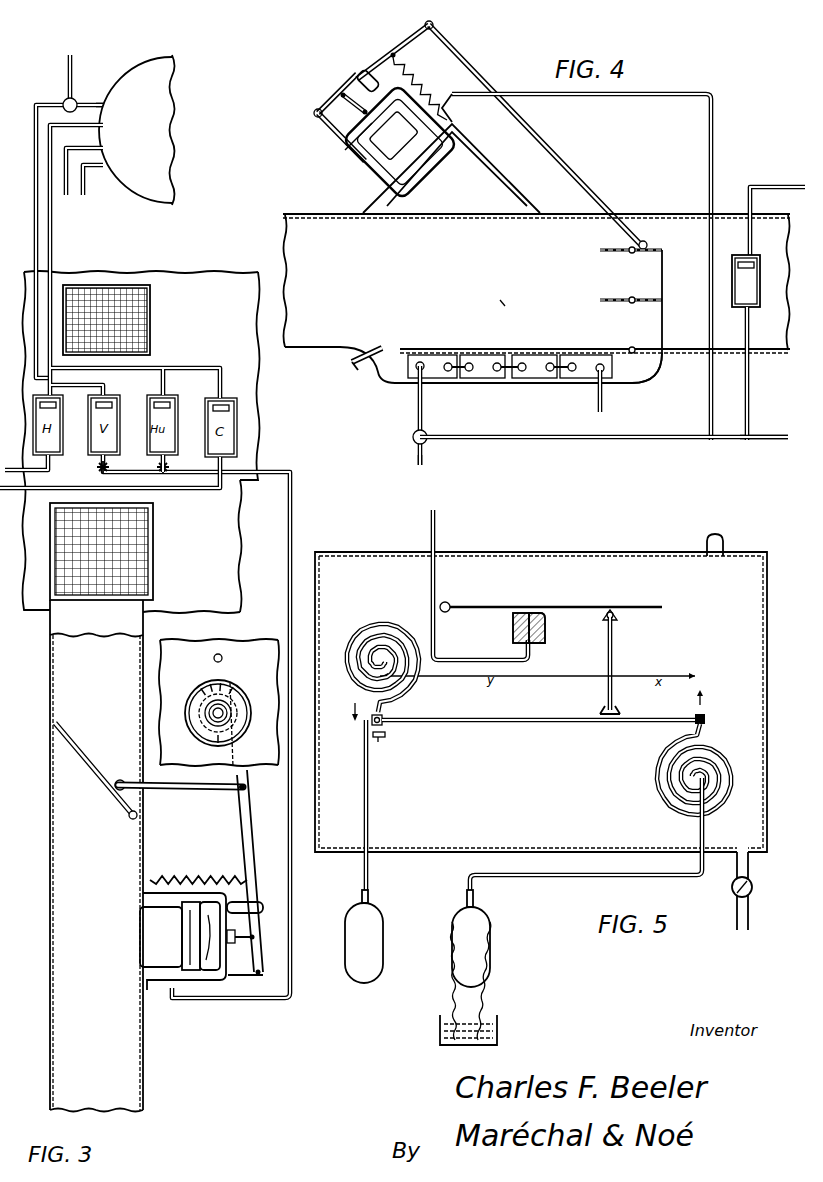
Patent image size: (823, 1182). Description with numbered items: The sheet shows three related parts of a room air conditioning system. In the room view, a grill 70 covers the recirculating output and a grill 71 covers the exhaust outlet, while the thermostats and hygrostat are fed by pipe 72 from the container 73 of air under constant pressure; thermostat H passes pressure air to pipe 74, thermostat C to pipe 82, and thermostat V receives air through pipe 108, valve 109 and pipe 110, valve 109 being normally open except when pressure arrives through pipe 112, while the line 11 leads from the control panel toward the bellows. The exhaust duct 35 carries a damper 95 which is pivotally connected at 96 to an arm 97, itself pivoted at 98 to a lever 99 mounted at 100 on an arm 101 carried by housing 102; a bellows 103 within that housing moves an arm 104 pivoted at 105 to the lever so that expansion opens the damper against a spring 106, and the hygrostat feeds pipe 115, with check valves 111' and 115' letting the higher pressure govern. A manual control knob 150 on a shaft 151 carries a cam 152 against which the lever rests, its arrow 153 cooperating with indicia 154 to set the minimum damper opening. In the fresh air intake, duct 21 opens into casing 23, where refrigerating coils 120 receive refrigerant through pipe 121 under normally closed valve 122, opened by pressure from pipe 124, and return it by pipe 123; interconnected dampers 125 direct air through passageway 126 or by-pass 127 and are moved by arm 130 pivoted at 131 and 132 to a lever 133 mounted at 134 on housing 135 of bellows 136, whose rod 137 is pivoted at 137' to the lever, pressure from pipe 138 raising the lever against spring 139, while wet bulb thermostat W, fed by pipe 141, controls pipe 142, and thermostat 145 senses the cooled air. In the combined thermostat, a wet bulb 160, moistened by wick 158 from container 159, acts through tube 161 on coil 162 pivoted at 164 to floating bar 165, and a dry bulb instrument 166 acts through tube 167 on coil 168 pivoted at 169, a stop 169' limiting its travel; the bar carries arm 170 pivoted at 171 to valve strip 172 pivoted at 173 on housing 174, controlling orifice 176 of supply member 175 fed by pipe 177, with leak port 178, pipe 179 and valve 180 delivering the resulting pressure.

In FIG. 3, the pipe 11 is at (287, 548).
In FIG. 4, the fresh air duct 21 is at (793, 290).
In FIG. 4, the casing 23 is at (660, 207).
In FIG. 3, the exhaust duct 35 is at (49, 806).
In FIG. 3, the grill 70 is at (151, 328).
In FIG. 3, the grill 71 is at (150, 543).
In FIG. 3, the pipe 72 is at (53, 252).
In FIG. 3, the container 73 is at (136, 130).
In FIG. 3, the pipe 74 is at (25, 459).
In FIG. 3, the pipe 82 is at (110, 483).
In FIG. 3, the damper 95 is at (97, 773).
In FIG. 3, the pivotal connection 96 is at (127, 771).
In FIG. 3, the arm 97 is at (167, 791).
In FIG. 3, the pivotal connection 98 is at (246, 787).
In FIG. 3, the lever 99 is at (243, 842).
In FIG. 3, the pivot 100 is at (262, 977).
In FIG. 3, the arm 101 is at (236, 977).
In FIG. 3, the housing 102 is at (184, 982).
In FIG. 3, the bellows 103 is at (150, 940).
In FIG. 3, the arm 104 is at (240, 946).
In FIG. 3, the pivotal connection 105 is at (256, 935).
In FIG. 3, the spring 106 is at (214, 878).
In FIG. 3, the pipe 108 is at (101, 104).
In FIG. 3, the valve 109 is at (66, 101).
In FIG. 3, the pipe 110 is at (36, 105).
In FIG. 3, the check valve 111' is at (86, 468).
In FIG. 3, the pipe 112 is at (68, 66).
In FIG. 4, the pipe 112 is at (752, 437).
In FIG. 3, the pipe 115 is at (188, 464).
In FIG. 3, the check valve 115' is at (147, 468).
In FIG. 4, the refrigerating coils 120 is at (485, 383).
In FIG. 4, the pipe 121 is at (415, 458).
In FIG. 4, the valve 122 is at (413, 436).
In FIG. 4, the pipe 123 is at (604, 406).
In FIG. 4, the pipe 124 is at (584, 440).
In FIG. 4, the dampers 125 is at (606, 250).
In FIG. 4, the passageway 126 is at (655, 376).
In FIG. 4, the by-pass 127 is at (504, 292).
In FIG. 4, the arm 130 is at (572, 166).
In FIG. 4, the pivotal connection 131 is at (648, 245).
In FIG. 4, the pivotal connection 132 is at (434, 26).
In FIG. 4, the lever 133 is at (410, 40).
In FIG. 4, the pivot 134 is at (314, 112).
In FIG. 4, the housing 135 is at (343, 148).
In FIG. 4, the bellows 136 is at (362, 175).
In FIG. 4, the rod 137 is at (331, 92).
In FIG. 4, the pivotal connection 137' is at (325, 76).
In FIG. 4, the pipe 138 is at (555, 100).
In FIG. 4, the spring 139 is at (410, 72).
In FIG. 3, the pipe 141 is at (87, 196).
In FIG. 4, the pipe 141 is at (752, 187).
In FIG. 4, the pipe 142 is at (750, 385).
In FIG. 4, the thermostat 145 is at (373, 350).
In FIG. 3, the manual control knob 150 is at (250, 674).
In FIG. 3, the shaft 151 is at (245, 740).
In FIG. 3, the cam 152 is at (208, 713).
In FIG. 3, the arrow 153 is at (240, 672).
In FIG. 3, the indicia 154 is at (216, 654).
In FIG. 5, the wick 158 is at (480, 1000).
In FIG. 5, the container 159 is at (497, 1028).
In FIG. 5, the wet bulb thermostat 160 is at (478, 942).
In FIG. 5, the fine bore tube 161 is at (544, 878).
In FIG. 5, the coil 162 is at (662, 803).
In FIG. 5, the pivotal connection 164 is at (693, 714).
In FIG. 5, the floating bar 165 is at (640, 725).
In FIG. 5, the dry bulb instrument 166 is at (375, 948).
In FIG. 5, the fine tube 167 is at (370, 828).
In FIG. 5, the coil 168 is at (418, 695).
In FIG. 5, the pivotal connection 169 is at (403, 731).
In FIG. 5, the stop 169' is at (395, 748).
In FIG. 5, the arm 170 is at (613, 665).
In FIG. 5, the pivotal connection 171 is at (614, 617).
In FIG. 5, the valve strip 172 is at (585, 604).
In FIG. 5, the pivot 173 is at (449, 603).
In FIG. 5, the housing 174 is at (495, 550).
In FIG. 5, the pressure fluid supply member 175 is at (540, 641).
In FIG. 5, the discharge orifice 176 is at (538, 598).
In FIG. 5, the pipe 177 is at (430, 592).
In FIG. 5, the leak port 178 is at (714, 534).
In FIG. 5, the pipe 179 is at (748, 870).
In FIG. 5, the pressure operated valve 180 is at (733, 892).